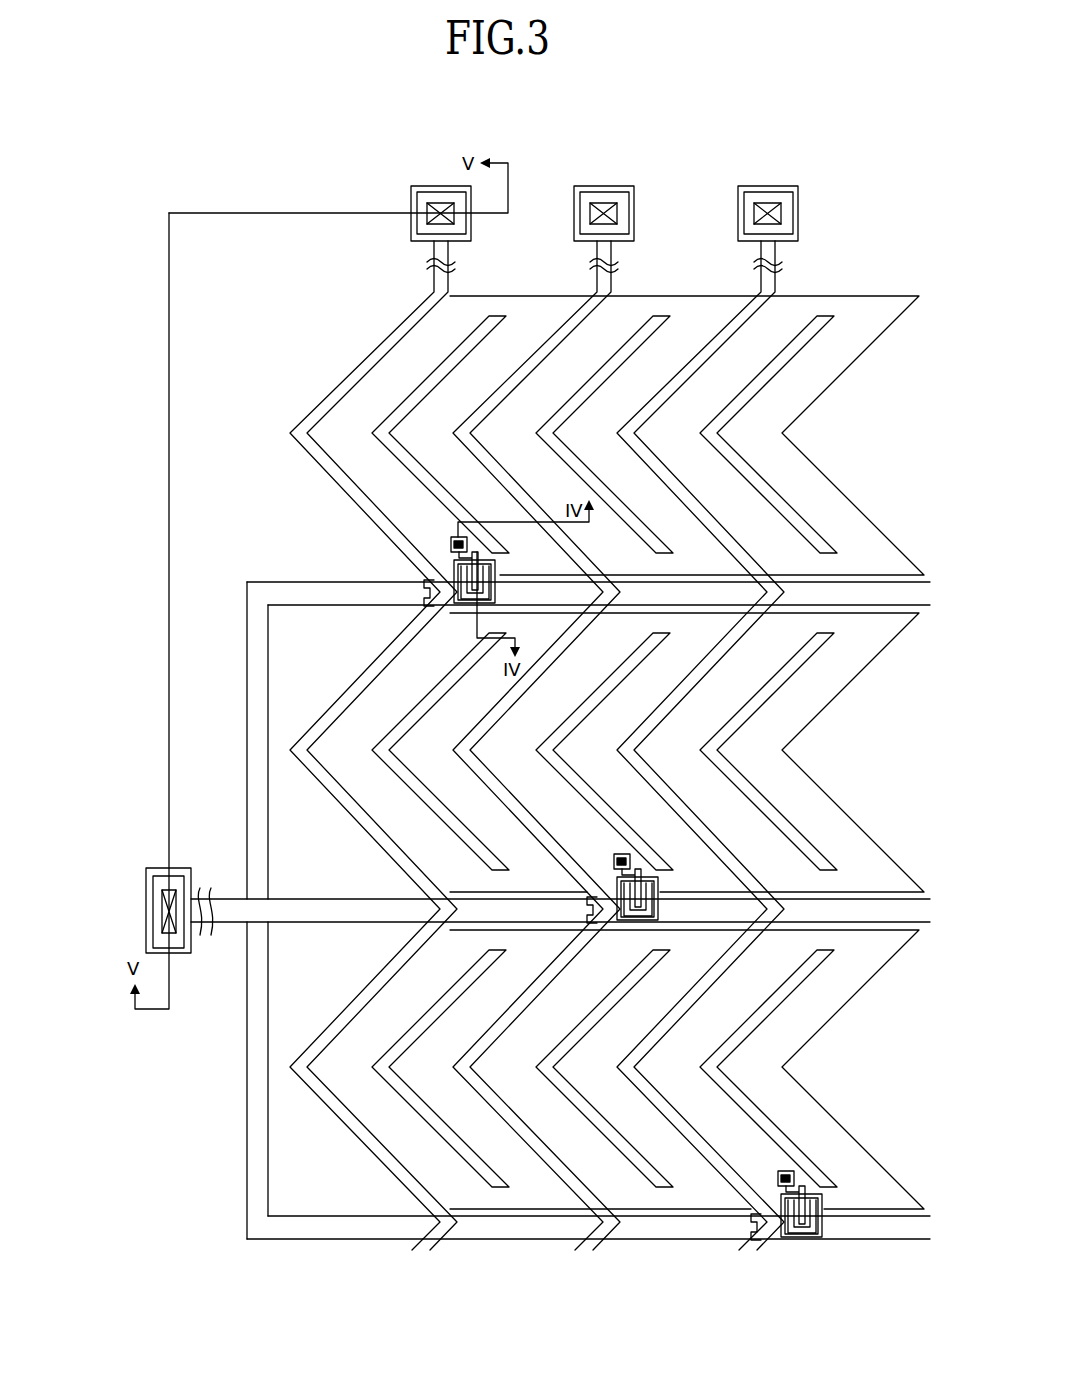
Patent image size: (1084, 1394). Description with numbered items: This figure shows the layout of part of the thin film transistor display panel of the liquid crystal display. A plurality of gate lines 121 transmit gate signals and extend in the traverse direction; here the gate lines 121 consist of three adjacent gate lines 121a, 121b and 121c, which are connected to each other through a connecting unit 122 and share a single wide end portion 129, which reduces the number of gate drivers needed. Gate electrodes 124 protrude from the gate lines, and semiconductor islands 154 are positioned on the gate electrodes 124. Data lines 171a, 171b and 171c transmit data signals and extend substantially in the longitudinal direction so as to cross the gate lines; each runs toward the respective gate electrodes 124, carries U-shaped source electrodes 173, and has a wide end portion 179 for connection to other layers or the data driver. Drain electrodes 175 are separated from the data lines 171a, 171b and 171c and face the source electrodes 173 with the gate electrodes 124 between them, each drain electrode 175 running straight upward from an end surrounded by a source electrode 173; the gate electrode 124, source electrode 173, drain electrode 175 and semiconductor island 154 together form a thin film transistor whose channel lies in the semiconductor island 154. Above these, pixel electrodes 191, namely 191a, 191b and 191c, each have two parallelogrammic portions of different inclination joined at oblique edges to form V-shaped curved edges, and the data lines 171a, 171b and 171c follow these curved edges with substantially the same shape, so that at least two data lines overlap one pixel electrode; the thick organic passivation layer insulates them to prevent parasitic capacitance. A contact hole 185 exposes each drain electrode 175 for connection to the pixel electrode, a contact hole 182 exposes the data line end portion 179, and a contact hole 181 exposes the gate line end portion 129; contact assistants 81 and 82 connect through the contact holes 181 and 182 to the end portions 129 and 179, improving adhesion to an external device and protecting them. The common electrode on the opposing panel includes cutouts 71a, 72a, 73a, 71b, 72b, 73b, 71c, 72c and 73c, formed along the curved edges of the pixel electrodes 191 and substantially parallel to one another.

The contact assistant 82 is at (443, 185).
The wide end portion 179 is at (411, 193).
The contact hole 182 is at (427, 222).
The data line 171a is at (393, 331).
The data line 171b is at (543, 718).
The data line 171c is at (707, 718).
The pixel electrodes 191 is at (490, 752).
The pixel electrode 191a is at (844, 374).
The pixel electrode 191b is at (844, 691).
The pixel electrode 191c is at (844, 1008).
The cutout 71a is at (422, 400).
The cutout 72a is at (604, 434).
The cutout 73a is at (768, 434).
The cutout 71b is at (440, 751).
The cutout 72b is at (604, 751).
The cutout 73b is at (768, 751).
The cutout 71c is at (440, 1068).
The cutout 72c is at (604, 1068).
The cutout 73c is at (768, 1068).
The gate lines 121 is at (493, 887).
The gate line 121a is at (299, 581).
The gate line 121b is at (319, 922).
The gate line 121c is at (311, 1216).
The connecting unit 122 is at (273, 830).
The contact assistant 81 is at (188, 868).
The wide end portion 129 is at (153, 940).
The contact hole 181 is at (162, 901).
The contact hole 185 is at (451, 544).
The drain electrode 175 is at (478, 552).
The semiconductor island 154 is at (495, 580).
The source electrode 173 is at (493, 592).
The gate electrode 124 is at (425, 585).